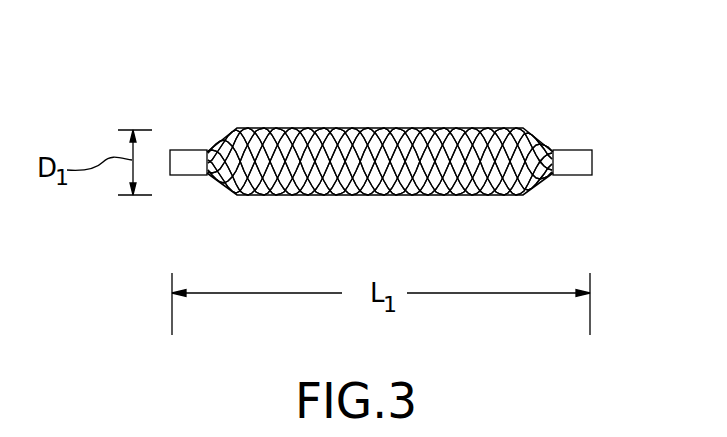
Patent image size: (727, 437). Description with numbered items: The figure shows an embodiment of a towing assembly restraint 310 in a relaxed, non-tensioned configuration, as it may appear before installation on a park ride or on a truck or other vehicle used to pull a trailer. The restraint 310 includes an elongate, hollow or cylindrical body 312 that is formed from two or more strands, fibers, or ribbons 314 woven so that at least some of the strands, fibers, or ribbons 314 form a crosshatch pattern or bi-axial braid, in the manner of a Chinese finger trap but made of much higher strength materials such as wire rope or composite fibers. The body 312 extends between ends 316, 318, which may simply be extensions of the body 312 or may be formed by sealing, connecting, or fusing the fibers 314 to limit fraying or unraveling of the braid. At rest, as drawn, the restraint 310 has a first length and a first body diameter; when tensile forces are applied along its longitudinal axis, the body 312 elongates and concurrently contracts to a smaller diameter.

The towing assembly restraint 310 is at (254, 86).
The body 312 is at (392, 128).
The strands, fibers, or ribbons 314 is at (482, 128).
The end 316 is at (576, 150).
The end 318 is at (203, 177).